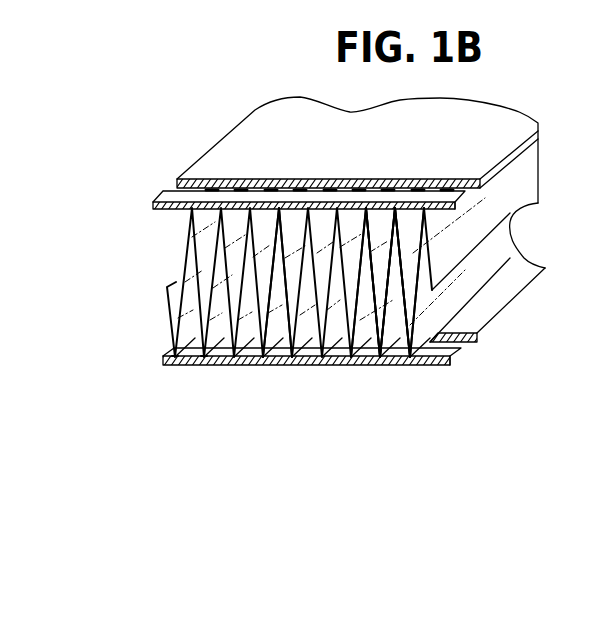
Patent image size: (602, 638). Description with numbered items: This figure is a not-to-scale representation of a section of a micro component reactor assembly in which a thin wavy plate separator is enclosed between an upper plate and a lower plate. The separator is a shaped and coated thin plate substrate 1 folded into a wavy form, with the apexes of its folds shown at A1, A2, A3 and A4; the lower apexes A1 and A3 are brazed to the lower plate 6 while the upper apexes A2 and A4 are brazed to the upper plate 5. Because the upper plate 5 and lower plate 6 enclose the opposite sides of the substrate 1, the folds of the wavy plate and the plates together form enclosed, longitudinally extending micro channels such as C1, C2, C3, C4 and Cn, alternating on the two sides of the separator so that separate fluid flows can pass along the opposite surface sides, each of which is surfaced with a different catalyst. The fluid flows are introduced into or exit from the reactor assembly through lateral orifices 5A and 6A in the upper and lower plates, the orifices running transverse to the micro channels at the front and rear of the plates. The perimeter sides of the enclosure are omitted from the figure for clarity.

The thin plate substrate 1 is at (172, 303).
The upper plate 5 is at (318, 149).
The lateral orifice 5A is at (472, 197).
The lower plate 6 is at (495, 310).
The lateral orifice 6A is at (468, 347).
The apex A1 is at (173, 357).
The apex A2 is at (212, 188).
The apex A3 is at (207, 358).
The apex A4 is at (243, 190).
The micro channel C1 is at (409, 232).
The micro channel C2 is at (393, 332).
The micro channel C3 is at (379, 233).
The micro channel C4 is at (364, 332).
The micro channel Cn is at (278, 330).